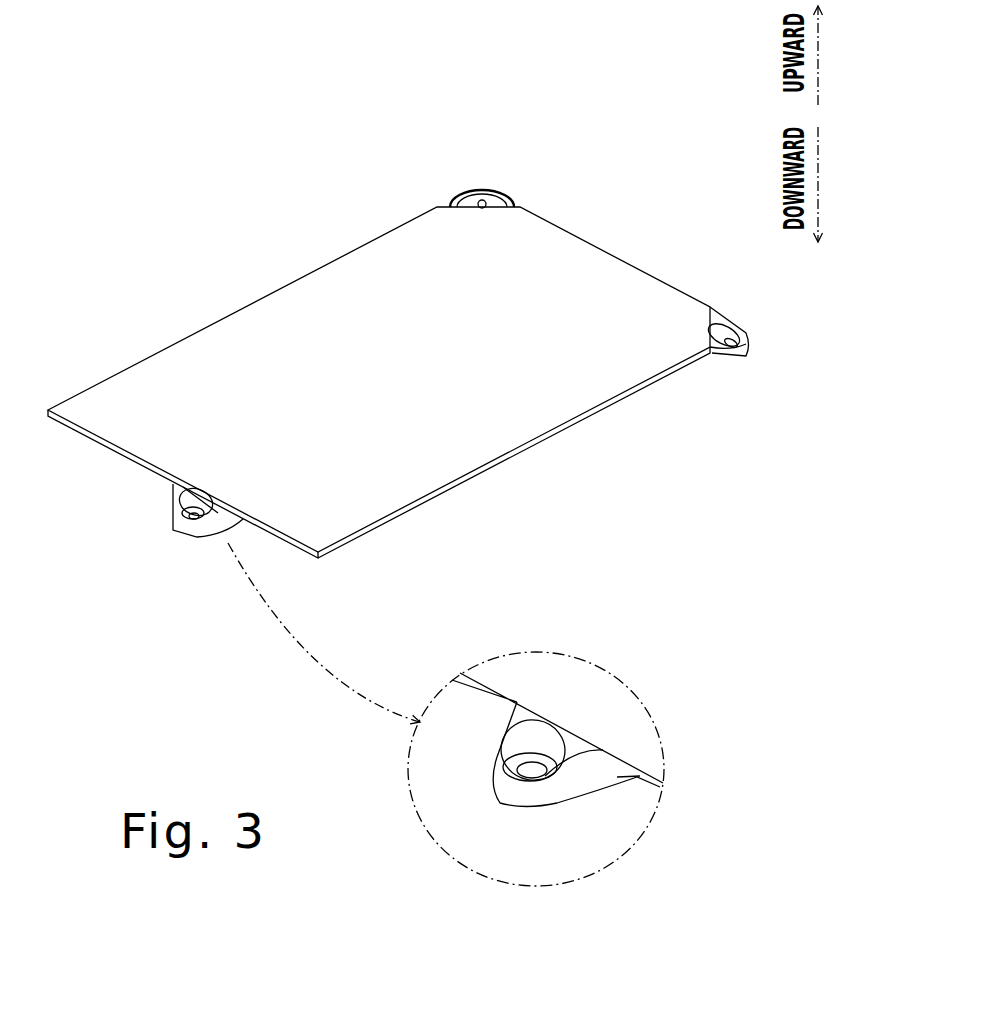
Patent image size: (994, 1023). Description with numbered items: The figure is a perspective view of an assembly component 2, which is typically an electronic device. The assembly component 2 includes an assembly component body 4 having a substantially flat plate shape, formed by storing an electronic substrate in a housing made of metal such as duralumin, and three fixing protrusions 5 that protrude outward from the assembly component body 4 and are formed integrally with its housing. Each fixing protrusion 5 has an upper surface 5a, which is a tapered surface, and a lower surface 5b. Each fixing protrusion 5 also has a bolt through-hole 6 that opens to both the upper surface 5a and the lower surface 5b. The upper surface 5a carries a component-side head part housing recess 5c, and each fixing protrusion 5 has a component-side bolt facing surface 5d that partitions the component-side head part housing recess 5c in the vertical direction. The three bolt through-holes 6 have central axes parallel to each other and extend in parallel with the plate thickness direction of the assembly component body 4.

The assembly component 2 is at (158, 78).
The assembly component body 4 is at (127, 385).
The fixing protrusion 5 is at (489, 186).
The upper surface 5a is at (517, 723).
The lower surface 5b is at (517, 812).
The component-side head part housing recess 5c is at (530, 767).
The component-side bolt facing surface 5d is at (507, 772).
The bolt through-hole 6 is at (487, 205).